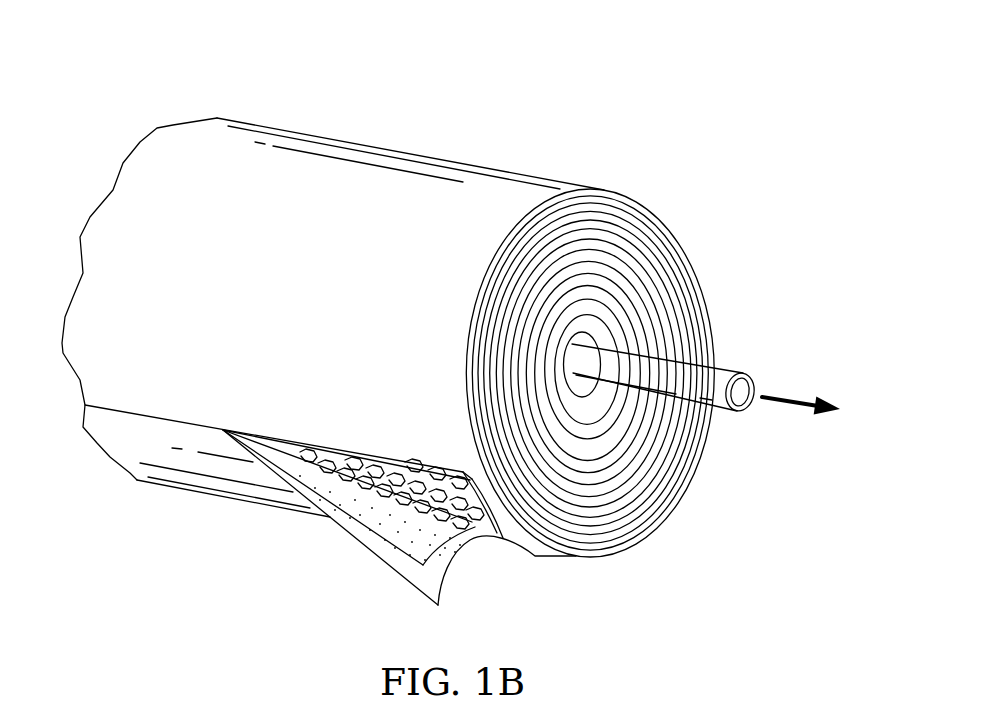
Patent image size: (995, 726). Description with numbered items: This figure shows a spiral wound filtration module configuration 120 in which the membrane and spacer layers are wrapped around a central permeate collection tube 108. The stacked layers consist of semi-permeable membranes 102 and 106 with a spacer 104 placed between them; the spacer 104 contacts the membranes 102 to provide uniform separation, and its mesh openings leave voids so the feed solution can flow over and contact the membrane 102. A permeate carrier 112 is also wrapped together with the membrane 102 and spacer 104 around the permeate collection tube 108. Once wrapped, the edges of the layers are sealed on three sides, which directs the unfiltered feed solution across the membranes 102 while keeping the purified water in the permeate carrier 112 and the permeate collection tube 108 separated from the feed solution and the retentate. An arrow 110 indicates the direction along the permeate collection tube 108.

The spiral wound filtration module configuration 120 is at (600, 114).
The semi-permeable membrane 102 is at (402, 508).
The spacer 104 is at (400, 478).
The semi-permeable membrane 106 is at (447, 575).
The permeate collection tube 108 is at (716, 408).
The winding axis direction 110 is at (787, 395).
The permeate carrier 112 is at (393, 542).